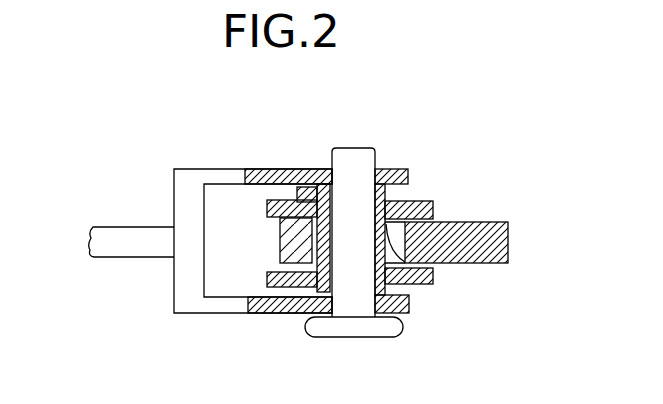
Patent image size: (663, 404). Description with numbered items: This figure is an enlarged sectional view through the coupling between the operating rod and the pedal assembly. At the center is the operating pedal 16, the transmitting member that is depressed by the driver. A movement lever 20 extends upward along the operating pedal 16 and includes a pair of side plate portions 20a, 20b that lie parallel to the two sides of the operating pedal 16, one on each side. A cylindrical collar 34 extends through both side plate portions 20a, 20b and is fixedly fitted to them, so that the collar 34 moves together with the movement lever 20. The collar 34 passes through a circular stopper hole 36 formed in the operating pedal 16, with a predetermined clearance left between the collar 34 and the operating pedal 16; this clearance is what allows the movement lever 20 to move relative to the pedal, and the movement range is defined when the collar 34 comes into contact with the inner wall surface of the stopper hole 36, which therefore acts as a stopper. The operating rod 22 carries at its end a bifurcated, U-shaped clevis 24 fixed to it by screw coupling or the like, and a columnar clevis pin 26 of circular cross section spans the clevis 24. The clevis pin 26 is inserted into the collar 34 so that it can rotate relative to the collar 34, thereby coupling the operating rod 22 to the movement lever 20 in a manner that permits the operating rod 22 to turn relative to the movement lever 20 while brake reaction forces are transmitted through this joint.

The operating pedal 16 is at (480, 238).
The movement lever 20 is at (237, 275).
The side plate portion 20a is at (290, 205).
The side plate portion 20b is at (292, 283).
The operating rod 22 is at (113, 243).
The clevis 24 is at (224, 182).
The clevis pin 26 is at (352, 172).
The collar 34 is at (416, 203).
The stopper hole 36 is at (417, 282).